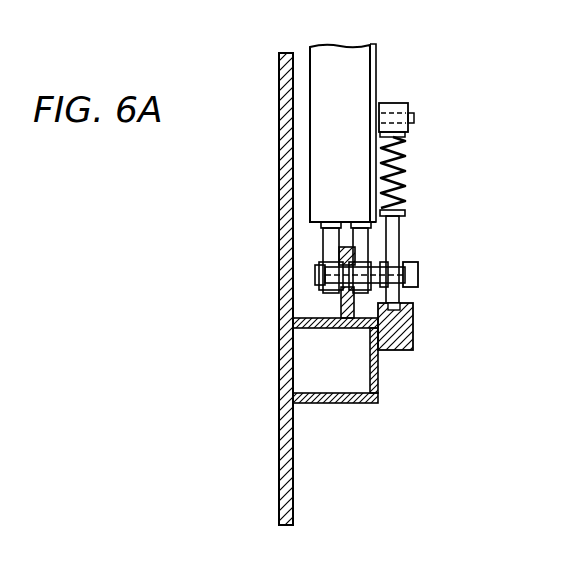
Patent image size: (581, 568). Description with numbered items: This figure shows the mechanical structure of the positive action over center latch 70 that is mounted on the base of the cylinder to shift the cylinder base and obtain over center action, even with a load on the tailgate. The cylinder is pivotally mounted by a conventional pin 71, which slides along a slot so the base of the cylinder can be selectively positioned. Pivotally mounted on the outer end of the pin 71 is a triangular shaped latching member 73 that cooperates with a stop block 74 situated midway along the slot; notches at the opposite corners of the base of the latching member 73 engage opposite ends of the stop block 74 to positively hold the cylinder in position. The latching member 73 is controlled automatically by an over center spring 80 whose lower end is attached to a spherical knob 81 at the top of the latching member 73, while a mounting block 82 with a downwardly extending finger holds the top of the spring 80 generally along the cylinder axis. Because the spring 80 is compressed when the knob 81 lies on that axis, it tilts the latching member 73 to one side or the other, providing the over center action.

The positive action over center latch 70 is at (466, 215).
The pin 71 is at (412, 290).
The triangular shaped latching member 73 is at (399, 243).
The stop block 74 is at (413, 340).
The over center spring 80 is at (405, 168).
The spherical knob 81 is at (405, 211).
The mounting block 82 is at (393, 103).